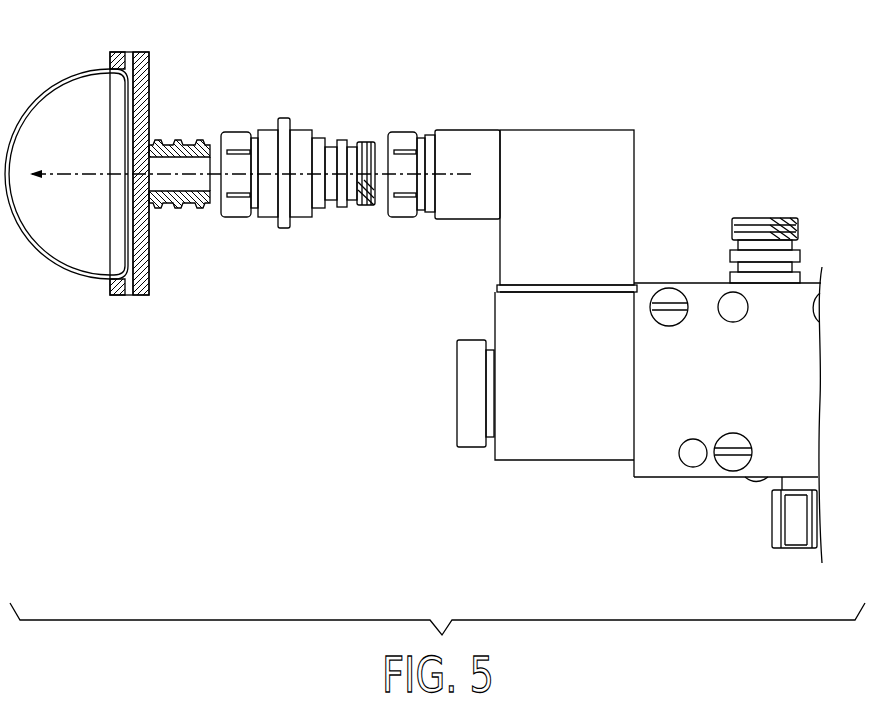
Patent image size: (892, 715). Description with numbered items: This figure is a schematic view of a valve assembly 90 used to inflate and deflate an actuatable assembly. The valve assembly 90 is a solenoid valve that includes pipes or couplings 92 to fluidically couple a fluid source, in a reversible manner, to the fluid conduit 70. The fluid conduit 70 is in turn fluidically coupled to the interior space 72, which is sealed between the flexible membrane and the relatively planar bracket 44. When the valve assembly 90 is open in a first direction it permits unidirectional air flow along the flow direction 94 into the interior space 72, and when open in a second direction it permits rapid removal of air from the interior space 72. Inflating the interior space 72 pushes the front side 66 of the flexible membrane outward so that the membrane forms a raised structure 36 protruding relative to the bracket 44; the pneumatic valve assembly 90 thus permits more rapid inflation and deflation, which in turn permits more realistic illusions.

The raised structure 36 is at (55, 262).
The bracket 44 is at (148, 83).
The front side 66 is at (36, 92).
The fluid conduit 70 is at (168, 183).
The interior space 72 is at (71, 142).
The valve assembly 90 is at (571, 489).
The coupling 92 is at (315, 138).
The optical axis 94 is at (95, 177).